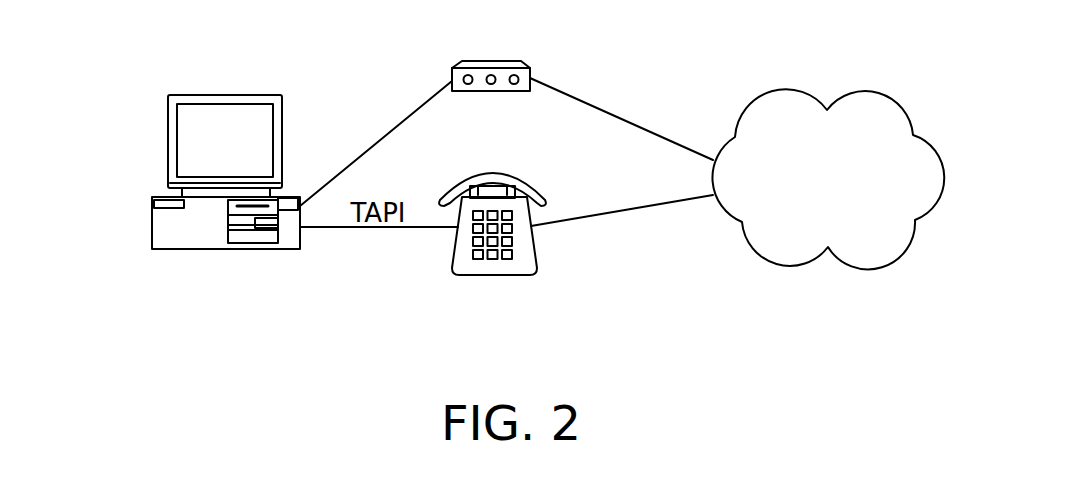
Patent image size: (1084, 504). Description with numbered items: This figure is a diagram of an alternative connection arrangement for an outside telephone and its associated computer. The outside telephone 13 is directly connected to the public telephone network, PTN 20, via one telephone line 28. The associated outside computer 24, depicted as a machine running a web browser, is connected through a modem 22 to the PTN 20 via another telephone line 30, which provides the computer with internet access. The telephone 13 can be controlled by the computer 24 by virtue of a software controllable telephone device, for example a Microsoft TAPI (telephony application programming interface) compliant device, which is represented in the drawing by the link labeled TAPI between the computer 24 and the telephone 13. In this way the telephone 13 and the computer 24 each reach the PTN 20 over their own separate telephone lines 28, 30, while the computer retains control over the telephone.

The outside computer 24 is at (152, 212).
The modem 22 is at (491, 61).
The telephone line 30 is at (615, 125).
The outside telephone 13 is at (453, 255).
The telephone line 28 is at (617, 213).
The PTN 20 is at (742, 224).